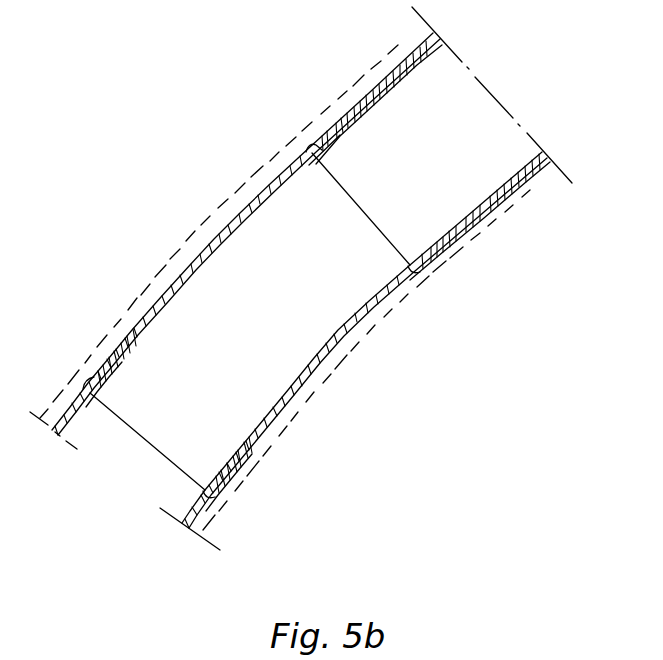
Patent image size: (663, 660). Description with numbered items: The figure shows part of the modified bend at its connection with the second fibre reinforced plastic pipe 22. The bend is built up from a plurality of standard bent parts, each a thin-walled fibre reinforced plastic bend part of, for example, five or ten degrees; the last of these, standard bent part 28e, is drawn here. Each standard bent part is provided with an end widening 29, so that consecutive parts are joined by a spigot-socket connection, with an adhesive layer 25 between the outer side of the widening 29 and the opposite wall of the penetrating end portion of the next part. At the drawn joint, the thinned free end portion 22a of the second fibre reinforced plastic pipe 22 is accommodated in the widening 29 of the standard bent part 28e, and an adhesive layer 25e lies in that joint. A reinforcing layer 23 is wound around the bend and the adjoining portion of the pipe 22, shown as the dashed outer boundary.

The second fibre reinforced plastic pipe 22 is at (388, 62).
The thinned free end portion 22a is at (340, 123).
The reinforcing layer 23 is at (211, 226).
The adhesive layer 25 is at (452, 247).
The reinforcing layer end portion 25e is at (247, 457).
The standard bent part 28e is at (325, 354).
The end widening 29 is at (335, 118).